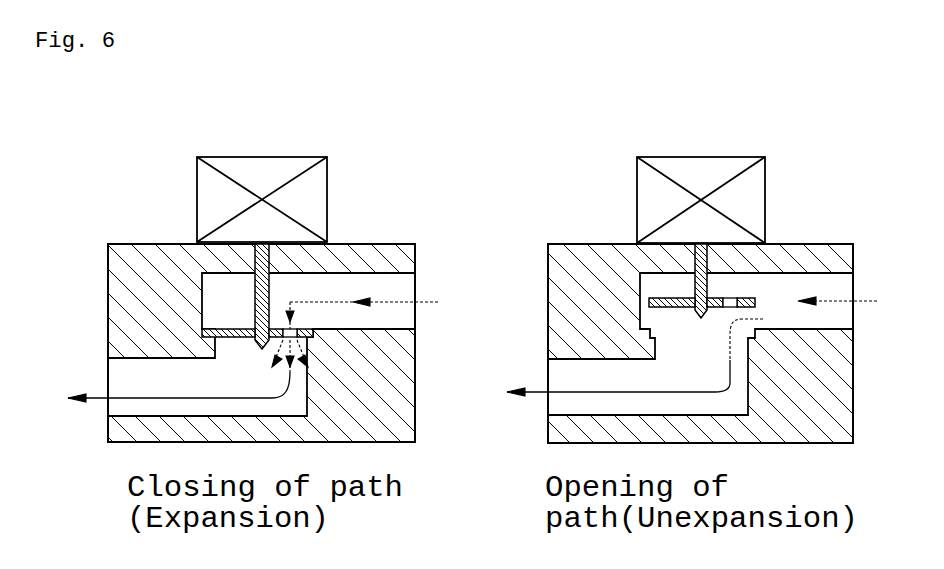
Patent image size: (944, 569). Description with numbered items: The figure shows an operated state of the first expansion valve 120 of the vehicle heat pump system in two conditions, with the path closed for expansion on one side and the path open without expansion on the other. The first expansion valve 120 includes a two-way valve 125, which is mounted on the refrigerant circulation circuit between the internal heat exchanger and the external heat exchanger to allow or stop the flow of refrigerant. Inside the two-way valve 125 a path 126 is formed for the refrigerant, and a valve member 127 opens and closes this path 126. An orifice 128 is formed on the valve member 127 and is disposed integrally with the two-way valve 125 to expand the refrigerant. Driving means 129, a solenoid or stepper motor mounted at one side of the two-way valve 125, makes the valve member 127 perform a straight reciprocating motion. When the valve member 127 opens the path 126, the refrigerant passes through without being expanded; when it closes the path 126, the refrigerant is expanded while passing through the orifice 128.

The first expansion valve 120 is at (112, 208).
The two-way valve 125 is at (140, 288).
The path 126 is at (193, 375).
The valve member 127 is at (233, 328).
The orifice 128 is at (297, 328).
The driving means 129 is at (258, 157).